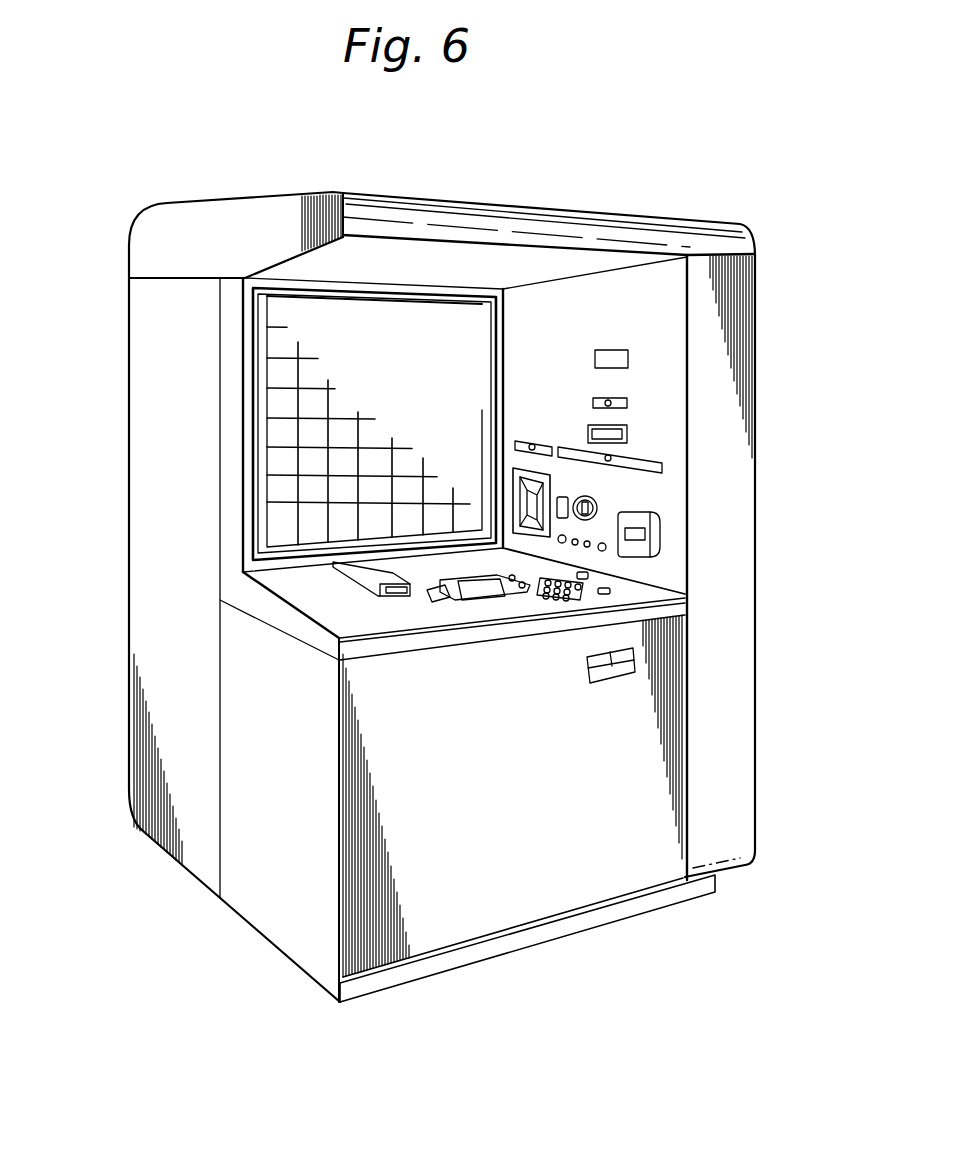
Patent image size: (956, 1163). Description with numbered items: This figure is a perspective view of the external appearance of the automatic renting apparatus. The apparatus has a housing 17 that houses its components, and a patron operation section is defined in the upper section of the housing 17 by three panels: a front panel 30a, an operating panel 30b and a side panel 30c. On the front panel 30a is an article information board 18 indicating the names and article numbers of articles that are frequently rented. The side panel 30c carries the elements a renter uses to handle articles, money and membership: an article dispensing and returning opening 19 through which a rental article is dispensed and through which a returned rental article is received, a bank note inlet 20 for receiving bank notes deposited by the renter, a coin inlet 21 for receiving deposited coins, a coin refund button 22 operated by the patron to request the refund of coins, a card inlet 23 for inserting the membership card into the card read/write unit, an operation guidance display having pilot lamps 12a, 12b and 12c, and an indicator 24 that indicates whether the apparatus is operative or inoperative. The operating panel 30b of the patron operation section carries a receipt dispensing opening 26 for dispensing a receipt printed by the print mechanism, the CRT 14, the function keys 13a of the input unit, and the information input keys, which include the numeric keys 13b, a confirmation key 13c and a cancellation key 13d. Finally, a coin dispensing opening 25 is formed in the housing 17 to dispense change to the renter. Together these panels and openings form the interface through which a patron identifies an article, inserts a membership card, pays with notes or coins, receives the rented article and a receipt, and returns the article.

The housing 17 is at (148, 352).
The article information board 18 is at (277, 408).
The article dispensing and returning opening 19 is at (530, 487).
The bank note inlet 20 is at (660, 535).
The coin inlet 21 is at (588, 495).
The coin refund button 22 is at (568, 497).
The card inlet 23 is at (627, 437).
The indicator 24 is at (628, 360).
The coin dispensing opening 25 is at (614, 682).
The receipt dispensing opening 26 is at (393, 594).
The pilot lamp 12a is at (523, 442).
The pilot lamp 12b is at (662, 470).
The pilot lamp 12c is at (627, 403).
The function keys 13a is at (433, 592).
The numeric keys 13b is at (555, 598).
The confirmation key 13c is at (608, 595).
The cancellation key 13d is at (590, 573).
The CRT 14 is at (478, 590).
The front panel 30a is at (248, 507).
The operating panel 30b is at (281, 578).
The side panel 30c is at (667, 323).